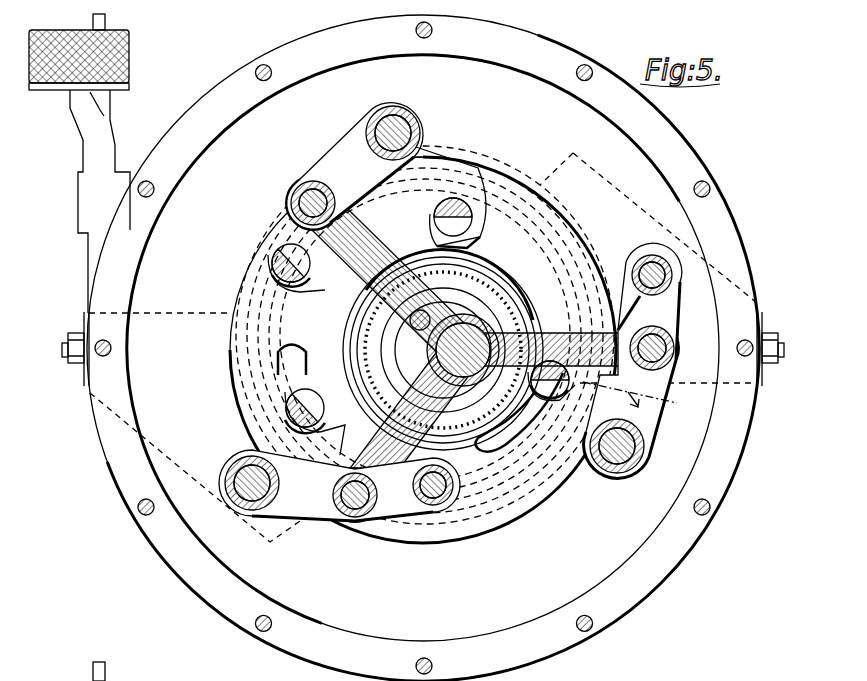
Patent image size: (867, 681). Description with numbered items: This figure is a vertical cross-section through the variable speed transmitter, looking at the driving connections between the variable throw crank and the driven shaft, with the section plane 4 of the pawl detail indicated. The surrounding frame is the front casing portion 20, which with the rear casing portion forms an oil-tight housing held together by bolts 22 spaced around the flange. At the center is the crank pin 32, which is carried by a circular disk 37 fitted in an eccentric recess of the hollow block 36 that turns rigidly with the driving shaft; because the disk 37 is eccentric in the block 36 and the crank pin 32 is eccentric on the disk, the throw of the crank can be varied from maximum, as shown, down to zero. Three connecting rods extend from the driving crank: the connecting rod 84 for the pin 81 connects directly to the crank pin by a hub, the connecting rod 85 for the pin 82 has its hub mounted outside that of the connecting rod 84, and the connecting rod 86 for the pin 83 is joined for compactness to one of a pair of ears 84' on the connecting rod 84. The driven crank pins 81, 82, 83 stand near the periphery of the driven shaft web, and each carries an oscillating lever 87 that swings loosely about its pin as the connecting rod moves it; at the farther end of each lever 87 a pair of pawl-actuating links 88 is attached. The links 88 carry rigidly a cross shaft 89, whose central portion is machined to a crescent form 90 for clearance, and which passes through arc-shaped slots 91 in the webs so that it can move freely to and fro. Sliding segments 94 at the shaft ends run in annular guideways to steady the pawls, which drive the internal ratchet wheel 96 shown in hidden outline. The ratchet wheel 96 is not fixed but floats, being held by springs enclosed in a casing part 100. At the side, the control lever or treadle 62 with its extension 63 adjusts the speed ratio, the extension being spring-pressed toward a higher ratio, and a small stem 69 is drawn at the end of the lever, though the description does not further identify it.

The front casing portion 20 is at (120, 497).
The bolts 22 is at (140, 512).
The crank pin 32 is at (455, 350).
The hollow block 36 is at (462, 302).
The circular disk 37 is at (383, 333).
The section plane 4 is at (639, 398).
The control lever or treadle 62 is at (130, 50).
The extension 63 is at (85, 255).
The stem 69 is at (105, 18).
The driven crank pin 81 is at (620, 511).
The driven crank pin 82 is at (215, 470).
The driven crank pin 83 is at (444, 109).
The connecting rod 84 is at (503, 414).
The ears of connecting rod 84' is at (380, 270).
The connecting rod 85 is at (434, 352).
The connecting rod 86 is at (372, 292).
The oscillating lever 87 is at (340, 150).
The pawl-actuating links 88 is at (298, 222).
The cross shaft 89 is at (285, 250).
The crescent form 90 is at (292, 263).
The slots 91 is at (278, 354).
The sliding segments 94 is at (522, 425).
The internal ratchet wheel 96 is at (230, 392).
The casing part 100 is at (160, 322).